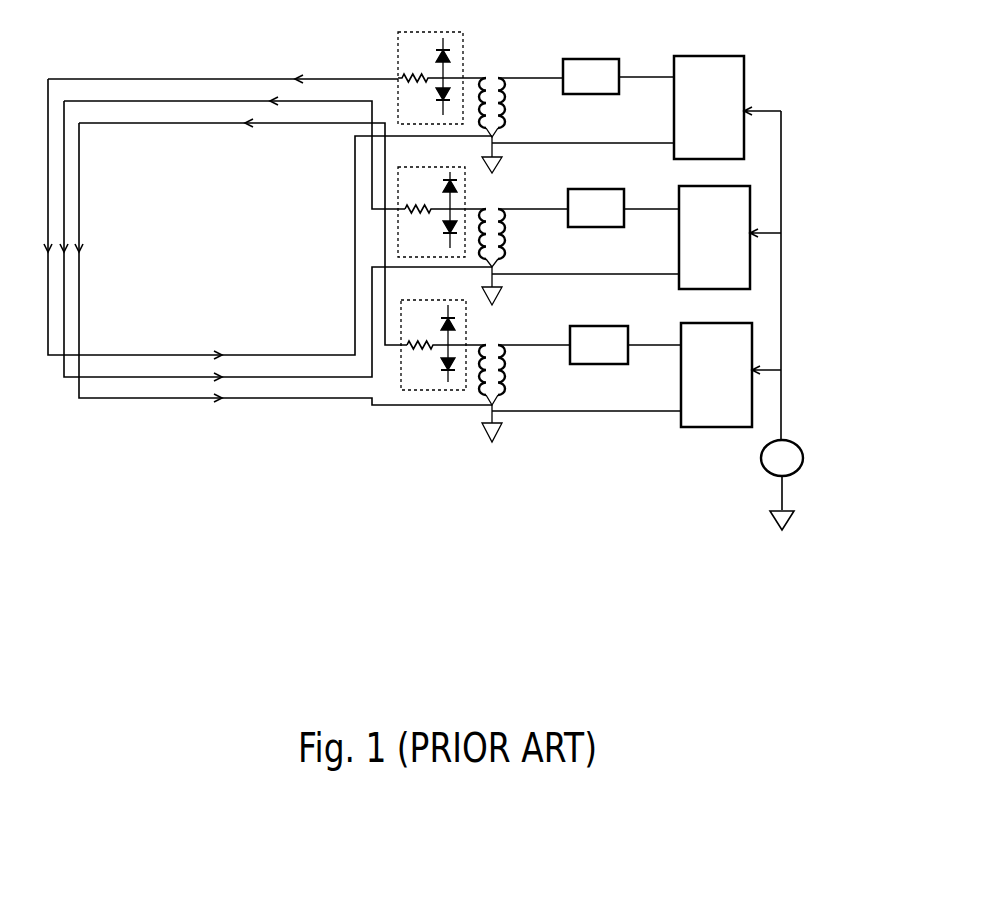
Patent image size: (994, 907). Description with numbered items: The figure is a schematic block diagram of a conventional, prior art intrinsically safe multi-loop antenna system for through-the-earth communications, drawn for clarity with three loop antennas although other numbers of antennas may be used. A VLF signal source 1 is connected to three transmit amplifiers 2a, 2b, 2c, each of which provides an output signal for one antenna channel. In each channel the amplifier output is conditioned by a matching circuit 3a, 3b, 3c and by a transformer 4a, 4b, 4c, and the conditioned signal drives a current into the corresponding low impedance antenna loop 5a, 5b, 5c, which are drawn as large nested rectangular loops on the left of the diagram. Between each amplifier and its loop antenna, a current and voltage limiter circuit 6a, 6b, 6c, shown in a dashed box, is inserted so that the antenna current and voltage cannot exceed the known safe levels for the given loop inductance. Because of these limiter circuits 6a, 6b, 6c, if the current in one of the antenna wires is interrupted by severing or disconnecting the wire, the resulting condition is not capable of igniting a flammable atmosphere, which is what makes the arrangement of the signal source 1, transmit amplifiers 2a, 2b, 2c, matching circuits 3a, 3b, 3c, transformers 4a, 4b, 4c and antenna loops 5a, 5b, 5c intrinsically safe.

The VLF signal source 1 is at (797, 437).
The transmit amplifier 2a is at (748, 86).
The transmit amplifier 2b is at (753, 217).
The transmit amplifier 2c is at (757, 337).
The matching circuit 3a is at (590, 59).
The matching circuit 3b is at (588, 189).
The matching circuit 3c is at (593, 326).
The transformer 4a is at (494, 74).
The transformer 4b is at (494, 205).
The transformer 4c is at (497, 341).
The antenna loop 5a is at (158, 78).
The antenna loop 5b is at (211, 100).
The antenna loop 5c is at (261, 122).
The current and voltage limiter circuit 6a is at (408, 35).
The current and voltage limiter circuit 6b is at (418, 183).
The current and voltage limiter circuit 6c is at (410, 385).